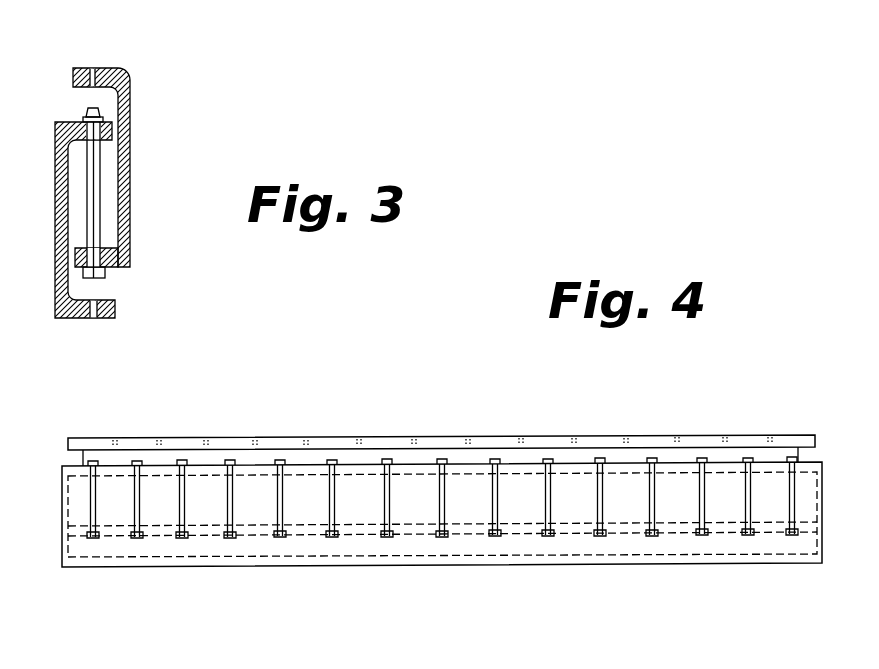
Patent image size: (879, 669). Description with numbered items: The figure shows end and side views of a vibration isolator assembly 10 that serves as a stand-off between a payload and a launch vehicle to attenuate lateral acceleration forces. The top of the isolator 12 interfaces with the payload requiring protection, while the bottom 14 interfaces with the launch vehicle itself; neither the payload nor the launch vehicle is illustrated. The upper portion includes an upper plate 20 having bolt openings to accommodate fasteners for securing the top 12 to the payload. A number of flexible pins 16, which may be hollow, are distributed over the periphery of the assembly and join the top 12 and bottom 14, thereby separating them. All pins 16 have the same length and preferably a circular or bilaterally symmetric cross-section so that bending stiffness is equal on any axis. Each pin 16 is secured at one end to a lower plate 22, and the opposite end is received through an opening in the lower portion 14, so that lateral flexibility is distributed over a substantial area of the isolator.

In FIG. 4, the isolator assembly 10 is at (647, 426).
In FIG. 3, the top of the isolator 12 is at (130, 115).
In FIG. 4, the top of the isolator 12 is at (380, 437).
In FIG. 3, the bottom of the isolator 14 is at (115, 312).
In FIG. 4, the bottom of the isolator 14 is at (237, 567).
In FIG. 4, the flexible pins 16 is at (743, 497).
In FIG. 3, the upper plate 20 is at (113, 68).
In FIG. 3, the lower plate 22 is at (110, 267).